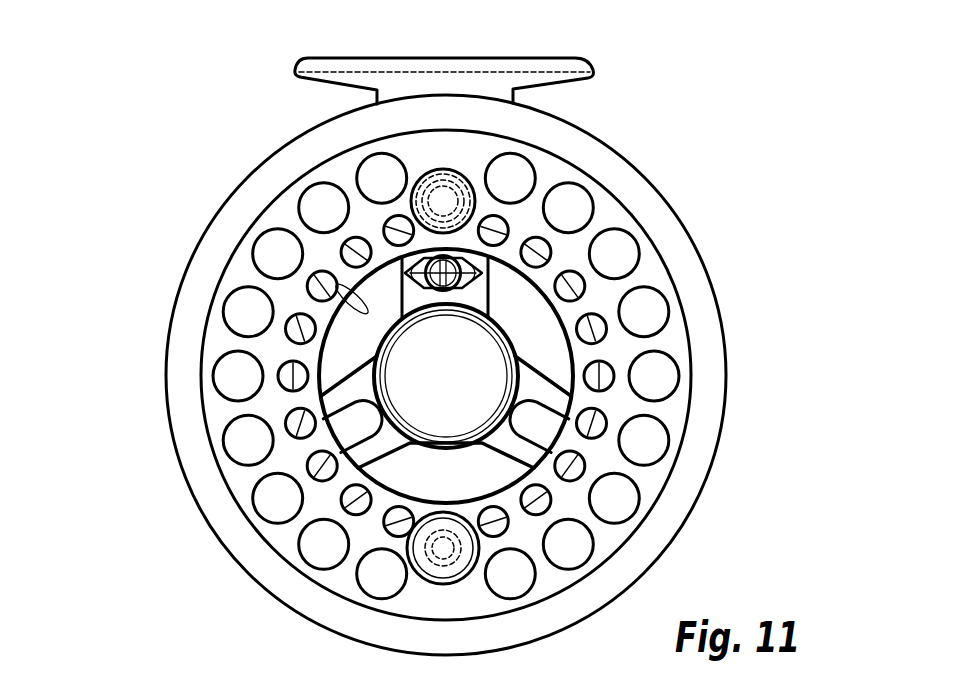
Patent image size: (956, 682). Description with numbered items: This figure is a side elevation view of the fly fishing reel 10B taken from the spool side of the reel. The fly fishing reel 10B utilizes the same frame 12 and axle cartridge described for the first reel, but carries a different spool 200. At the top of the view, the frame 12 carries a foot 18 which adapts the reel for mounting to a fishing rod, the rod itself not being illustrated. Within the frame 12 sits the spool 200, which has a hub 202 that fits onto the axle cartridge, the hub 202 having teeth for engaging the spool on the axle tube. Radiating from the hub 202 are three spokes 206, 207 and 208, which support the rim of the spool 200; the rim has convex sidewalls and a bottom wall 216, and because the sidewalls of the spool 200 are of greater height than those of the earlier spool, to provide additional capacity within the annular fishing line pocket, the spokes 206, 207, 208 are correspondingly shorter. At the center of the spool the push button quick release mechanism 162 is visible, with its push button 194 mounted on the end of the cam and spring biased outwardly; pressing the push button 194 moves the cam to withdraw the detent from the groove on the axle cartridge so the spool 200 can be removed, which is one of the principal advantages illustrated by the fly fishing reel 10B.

The fly fishing reel 10B is at (250, 146).
The frame 12 is at (599, 52).
The foot 18 is at (362, 58).
The quick release mechanism 162 is at (480, 251).
The push button 194 is at (478, 297).
The spool 200 is at (234, 580).
The hub 202 is at (384, 338).
The spoke 206 is at (340, 390).
The spoke 207 is at (537, 388).
The spoke 208 is at (487, 295).
The bottom wall 216 is at (338, 287).